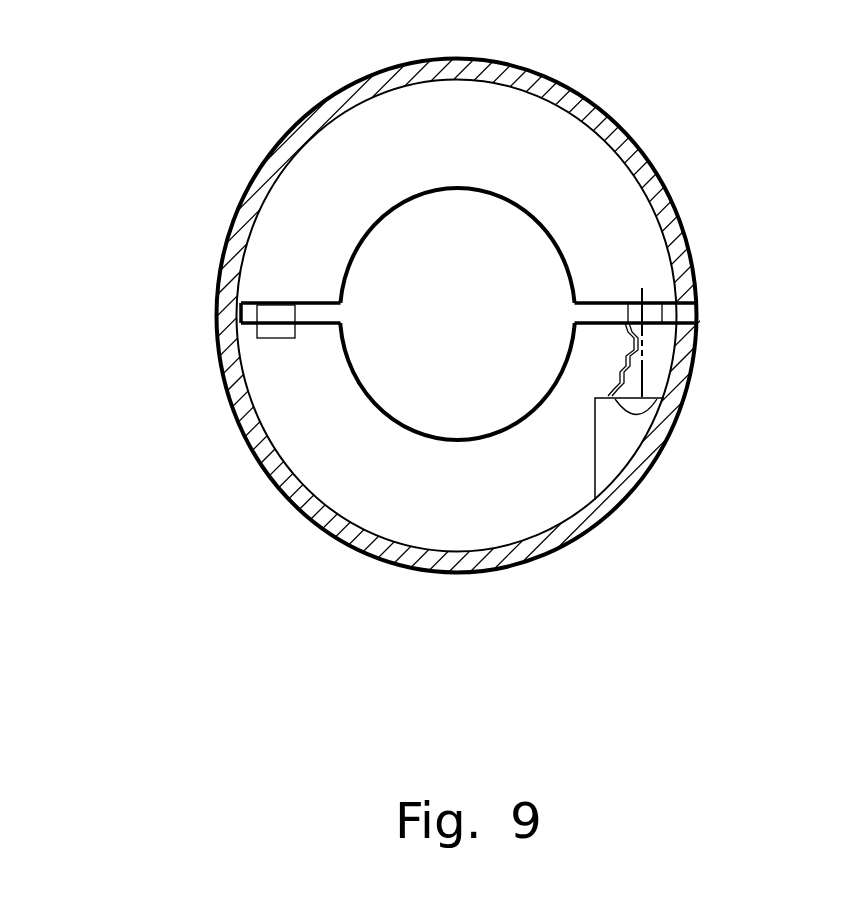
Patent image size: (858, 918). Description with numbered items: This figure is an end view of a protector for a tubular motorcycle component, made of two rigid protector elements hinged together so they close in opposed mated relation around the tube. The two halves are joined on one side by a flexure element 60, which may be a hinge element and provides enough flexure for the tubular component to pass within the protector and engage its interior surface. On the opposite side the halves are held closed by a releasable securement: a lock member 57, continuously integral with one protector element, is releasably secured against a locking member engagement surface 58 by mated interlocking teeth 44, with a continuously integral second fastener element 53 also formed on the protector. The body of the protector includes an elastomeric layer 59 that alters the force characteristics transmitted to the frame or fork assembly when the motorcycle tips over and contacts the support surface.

The elastomeric layer 59 is at (573, 101).
The interlocking teeth 44 is at (620, 361).
The flexure element 60 is at (240, 315).
The lock member 57 is at (655, 313).
The locking member engagement surface 58 is at (612, 388).
The second fastener element 53 is at (640, 405).